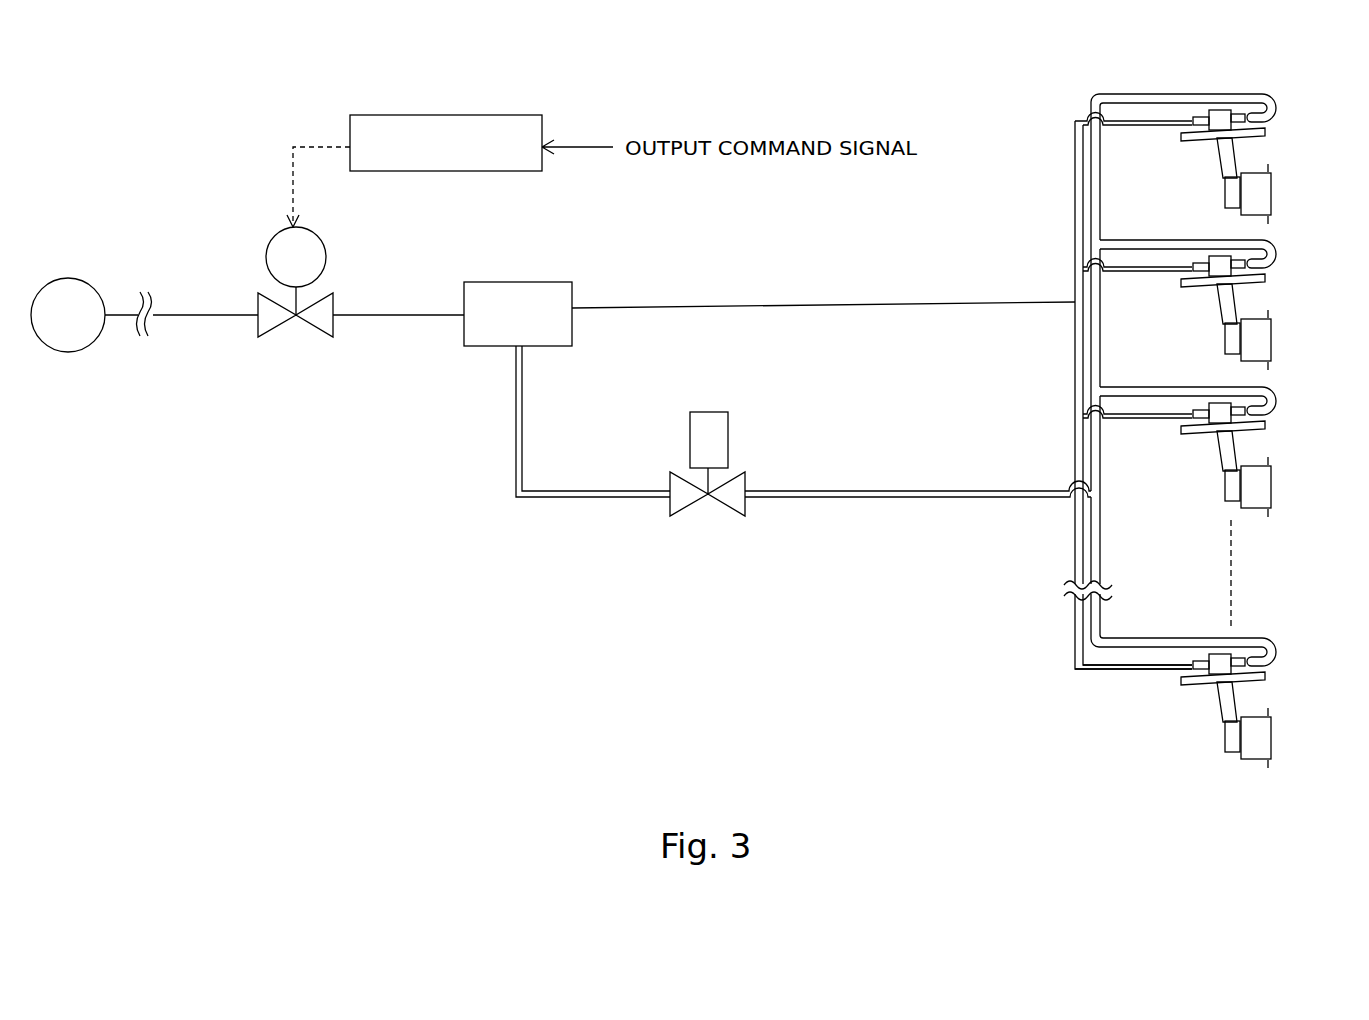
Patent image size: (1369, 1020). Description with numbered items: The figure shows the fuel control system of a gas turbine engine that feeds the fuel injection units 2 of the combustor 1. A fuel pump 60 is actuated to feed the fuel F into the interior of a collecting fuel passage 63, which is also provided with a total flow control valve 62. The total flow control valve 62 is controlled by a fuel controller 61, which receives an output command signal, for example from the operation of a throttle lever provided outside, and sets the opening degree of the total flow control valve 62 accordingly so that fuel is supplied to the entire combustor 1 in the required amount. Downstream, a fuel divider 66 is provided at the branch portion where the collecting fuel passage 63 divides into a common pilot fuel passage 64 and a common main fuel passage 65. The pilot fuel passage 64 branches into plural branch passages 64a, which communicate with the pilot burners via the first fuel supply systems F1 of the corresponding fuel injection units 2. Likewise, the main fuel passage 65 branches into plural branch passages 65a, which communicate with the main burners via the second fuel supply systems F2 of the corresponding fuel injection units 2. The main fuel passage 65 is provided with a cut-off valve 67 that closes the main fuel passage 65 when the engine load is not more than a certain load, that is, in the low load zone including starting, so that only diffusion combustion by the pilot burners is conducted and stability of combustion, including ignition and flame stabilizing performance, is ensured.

The combustor 1 is at (1047, 157).
The fuel injection unit 2 is at (1280, 168).
The fuel pump 60 is at (70, 278).
The fuel controller 61 is at (462, 127).
The total flow control valve 62 is at (318, 245).
The collecting fuel passage 63 is at (402, 318).
The pilot fuel passage 64 is at (832, 303).
The branch passage 64a is at (1140, 126).
The main fuel passage 65 is at (876, 490).
The branch passage 65a is at (1150, 94).
The fuel divider 66 is at (527, 300).
The cut-off valve 67 is at (718, 508).
The fuel F is at (218, 307).
The first fuel supply system F1 is at (1202, 117).
The second fuel supply system F2 is at (1245, 112).